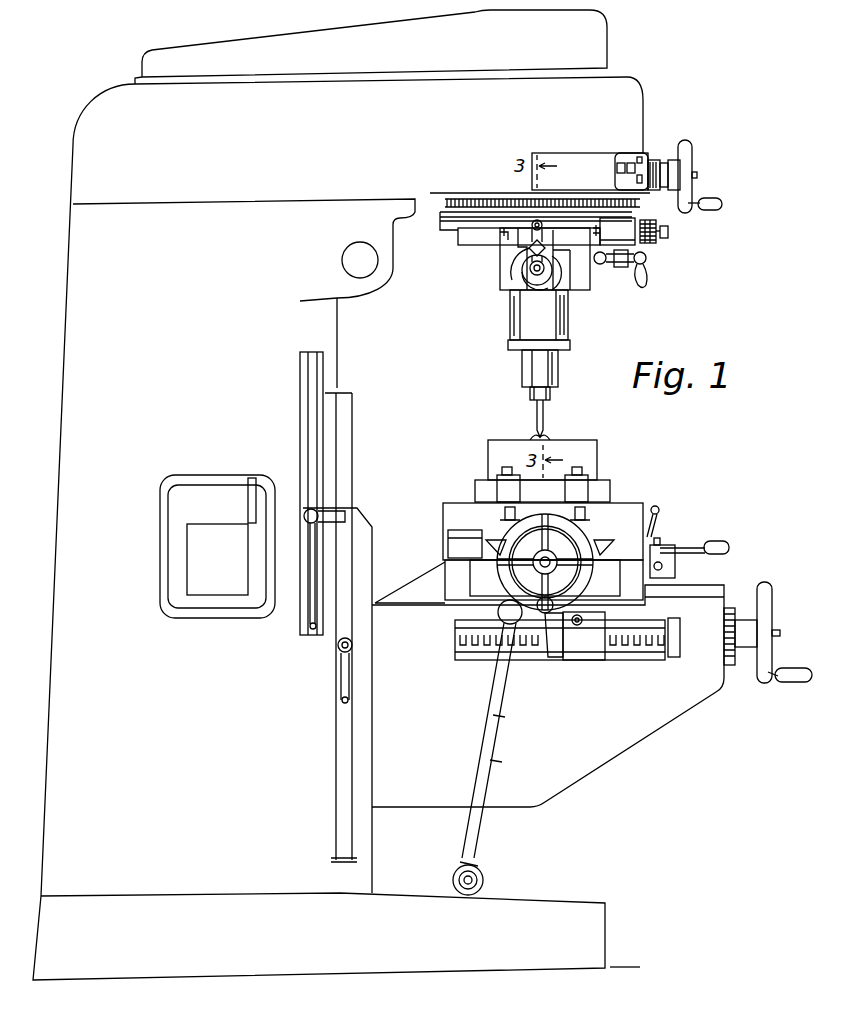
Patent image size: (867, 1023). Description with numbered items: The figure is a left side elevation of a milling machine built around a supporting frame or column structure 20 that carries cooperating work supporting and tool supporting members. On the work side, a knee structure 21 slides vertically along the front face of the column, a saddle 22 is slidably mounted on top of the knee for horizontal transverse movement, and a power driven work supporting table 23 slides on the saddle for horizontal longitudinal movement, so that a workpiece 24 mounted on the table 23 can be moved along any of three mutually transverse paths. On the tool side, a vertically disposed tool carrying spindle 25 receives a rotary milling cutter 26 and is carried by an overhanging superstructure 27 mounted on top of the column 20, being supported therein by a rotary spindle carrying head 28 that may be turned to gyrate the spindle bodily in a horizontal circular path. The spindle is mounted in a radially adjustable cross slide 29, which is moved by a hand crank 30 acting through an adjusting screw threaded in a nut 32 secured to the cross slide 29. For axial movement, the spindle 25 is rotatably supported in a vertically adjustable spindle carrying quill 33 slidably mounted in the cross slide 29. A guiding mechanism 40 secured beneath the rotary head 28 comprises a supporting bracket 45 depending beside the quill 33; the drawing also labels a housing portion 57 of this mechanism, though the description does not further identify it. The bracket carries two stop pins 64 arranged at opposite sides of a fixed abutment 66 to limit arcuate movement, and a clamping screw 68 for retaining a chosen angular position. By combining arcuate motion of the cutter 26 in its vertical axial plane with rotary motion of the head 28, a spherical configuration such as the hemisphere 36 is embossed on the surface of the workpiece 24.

The supporting frame or column structure 20 is at (80, 300).
The knee structure 21 is at (637, 746).
The saddle 22 is at (447, 585).
The work supporting table 23 is at (445, 522).
The workpiece 24 is at (488, 456).
The tool carrying spindle 25 is at (530, 394).
The rotary milling cutter 26 is at (537, 417).
The overhanging superstructure 27 is at (622, 90).
The rotary spindle carrying head 28 is at (440, 214).
The cross slide 29 is at (458, 237).
The hand crank 30 is at (645, 284).
The nut 32 is at (630, 231).
The spindle carrying quill 33 is at (527, 370).
The hemisphere 36 is at (548, 438).
The guiding mechanism 40 is at (489, 300).
The supporting bracket 45 is at (504, 236).
The housing 57 is at (565, 251).
The stop pins 64 is at (500, 273).
The fixed abutment 66 is at (520, 318).
The clamping screw 68 is at (539, 320).